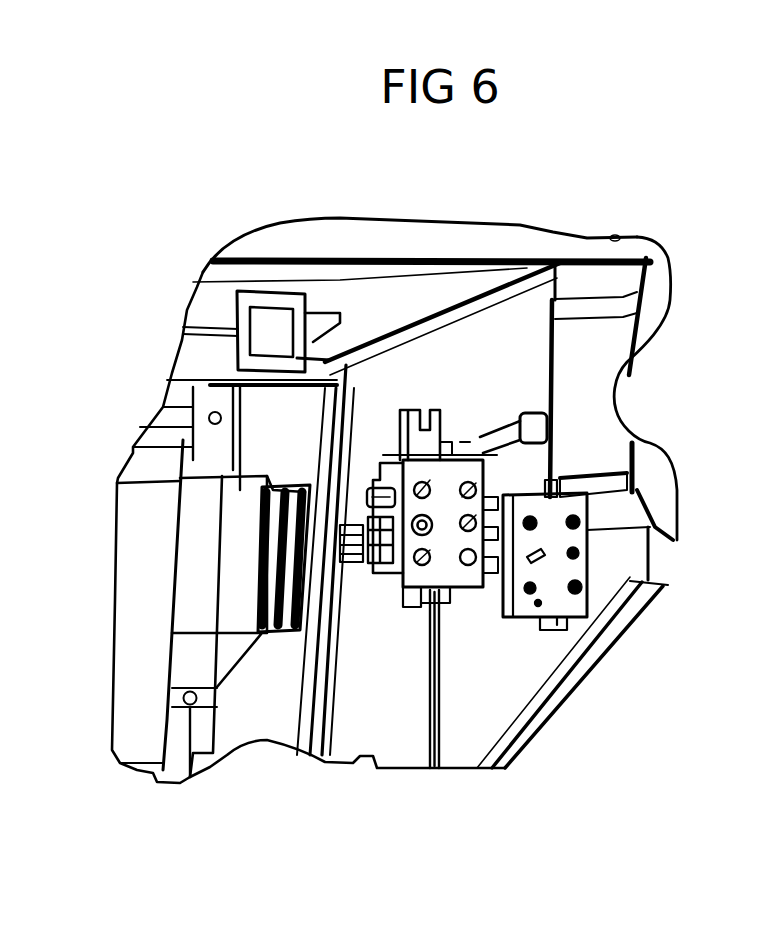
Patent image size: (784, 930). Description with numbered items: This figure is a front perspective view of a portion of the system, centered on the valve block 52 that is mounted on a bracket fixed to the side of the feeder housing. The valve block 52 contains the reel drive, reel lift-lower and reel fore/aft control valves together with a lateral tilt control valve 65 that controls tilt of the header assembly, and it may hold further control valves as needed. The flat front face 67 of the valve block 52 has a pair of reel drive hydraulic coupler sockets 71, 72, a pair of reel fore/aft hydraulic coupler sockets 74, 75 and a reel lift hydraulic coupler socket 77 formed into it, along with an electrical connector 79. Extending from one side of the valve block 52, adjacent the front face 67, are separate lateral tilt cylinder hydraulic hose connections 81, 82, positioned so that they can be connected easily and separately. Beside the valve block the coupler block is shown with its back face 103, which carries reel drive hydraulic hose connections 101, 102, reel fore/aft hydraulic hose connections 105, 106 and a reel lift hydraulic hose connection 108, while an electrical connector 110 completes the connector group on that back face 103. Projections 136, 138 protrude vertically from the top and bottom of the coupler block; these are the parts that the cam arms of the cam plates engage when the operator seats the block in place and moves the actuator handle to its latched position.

The valve block 52 is at (475, 450).
The lateral tilt control valve 65 is at (363, 515).
The flat front face 67 is at (437, 588).
The reel drive hydraulic coupler socket 71 is at (393, 462).
The reel drive hydraulic coupler socket 72 is at (480, 440).
The reel fore/aft hydraulic coupler socket 74 is at (410, 600).
The reel fore/aft hydraulic coupler socket 75 is at (468, 578).
The reel lift hydraulic coupler socket 77 is at (550, 492).
The electrical connector 79 is at (403, 565).
The lateral tilt cylinder hydraulic hose connection 81 is at (367, 493).
The lateral tilt cylinder hydraulic hose connection 82 is at (372, 578).
The reel drive hydraulic hose connection 101 is at (578, 522).
The reel drive hydraulic hose connection 102 is at (535, 518).
The back face 103 is at (557, 585).
The reel fore/aft hydraulic hose connection 105 is at (527, 605).
The reel fore/aft hydraulic hose connection 106 is at (588, 620).
The reel lift hydraulic hose connection 108 is at (588, 553).
The electrical connector 110 is at (648, 527).
The projection 136 is at (557, 470).
The projection 138 is at (552, 628).